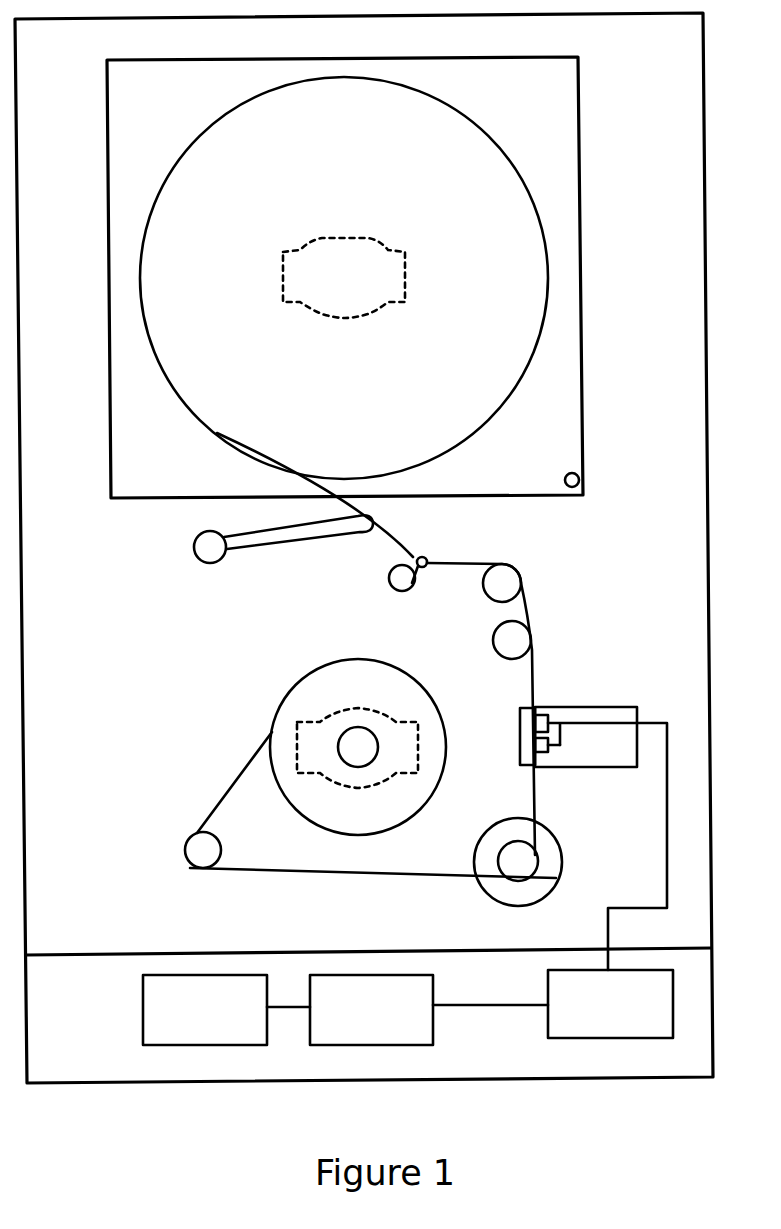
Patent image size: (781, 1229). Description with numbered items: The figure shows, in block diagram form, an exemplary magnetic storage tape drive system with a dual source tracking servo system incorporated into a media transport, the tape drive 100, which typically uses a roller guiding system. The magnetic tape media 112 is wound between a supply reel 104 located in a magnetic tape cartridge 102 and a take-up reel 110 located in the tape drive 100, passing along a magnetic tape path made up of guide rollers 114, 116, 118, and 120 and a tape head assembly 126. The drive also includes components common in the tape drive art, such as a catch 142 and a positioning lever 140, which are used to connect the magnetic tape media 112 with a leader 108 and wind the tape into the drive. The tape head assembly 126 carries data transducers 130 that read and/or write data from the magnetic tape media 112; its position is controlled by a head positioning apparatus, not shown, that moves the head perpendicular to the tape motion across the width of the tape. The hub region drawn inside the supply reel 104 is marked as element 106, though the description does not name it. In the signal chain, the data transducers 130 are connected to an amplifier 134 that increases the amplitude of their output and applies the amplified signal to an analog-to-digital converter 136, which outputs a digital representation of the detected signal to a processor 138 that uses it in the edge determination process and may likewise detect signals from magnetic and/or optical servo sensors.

The tape drive 100 is at (710, 478).
The magnetic tape cartridge 102 is at (583, 366).
The supply reel 104 is at (498, 410).
The supply reel hub / motor 106 is at (345, 318).
The leader 108 is at (334, 503).
The take-up reel 110 is at (387, 835).
The magnetic tape media 112 is at (535, 806).
The guide roller 114 is at (194, 859).
The guide roller 116 is at (556, 873).
The guide roller 118 is at (532, 635).
The guide roller 120 is at (522, 570).
The tape head assembly 126 is at (608, 707).
The data transducers 130 is at (573, 738).
The amplifier 134 is at (594, 1040).
The analog-to-digital converter 136 is at (350, 1047).
The processor 138 is at (172, 1047).
The positioning lever 140 is at (262, 548).
The catch 142 is at (403, 591).